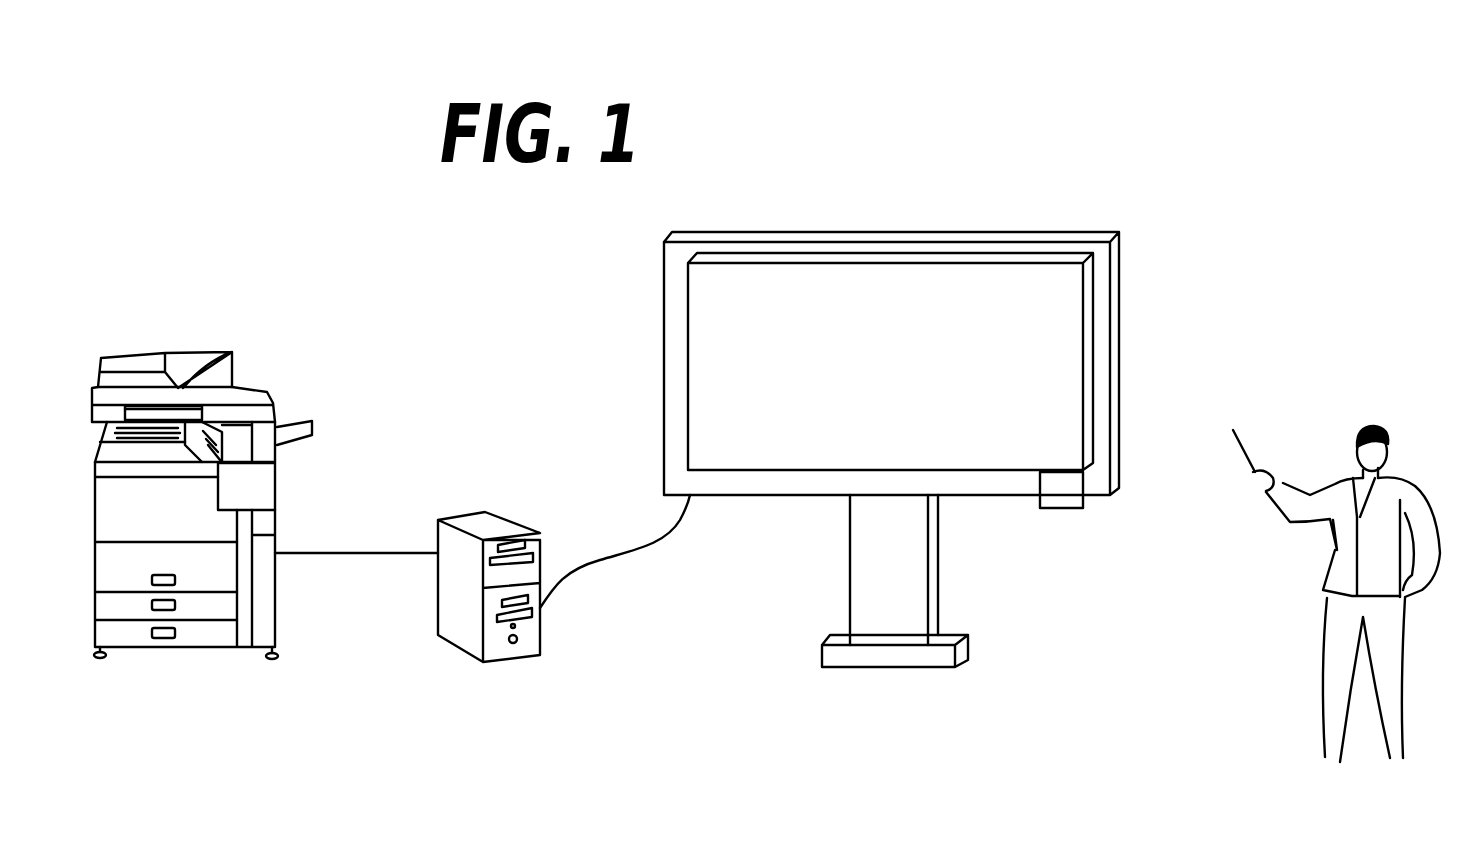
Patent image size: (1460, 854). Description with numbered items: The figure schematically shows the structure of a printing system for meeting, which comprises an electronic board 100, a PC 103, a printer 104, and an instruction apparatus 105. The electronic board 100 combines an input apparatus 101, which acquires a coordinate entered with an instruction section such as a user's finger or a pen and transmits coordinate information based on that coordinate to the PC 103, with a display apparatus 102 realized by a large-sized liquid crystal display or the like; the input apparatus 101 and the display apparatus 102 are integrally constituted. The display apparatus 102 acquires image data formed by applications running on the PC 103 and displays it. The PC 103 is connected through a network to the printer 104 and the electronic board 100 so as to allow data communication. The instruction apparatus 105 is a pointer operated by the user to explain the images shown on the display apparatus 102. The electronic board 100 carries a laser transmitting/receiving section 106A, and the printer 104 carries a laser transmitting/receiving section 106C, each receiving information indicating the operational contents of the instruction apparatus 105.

The electronic board 100 is at (865, 563).
The input apparatus 101 is at (820, 236).
The display apparatus 102 is at (1007, 257).
The PC 103 is at (460, 631).
The printer 104 is at (137, 634).
The instruction apparatus 105 is at (1247, 450).
The laser transmitting/receiving section 106A is at (1063, 500).
The laser transmitting/receiving section 106C is at (262, 485).